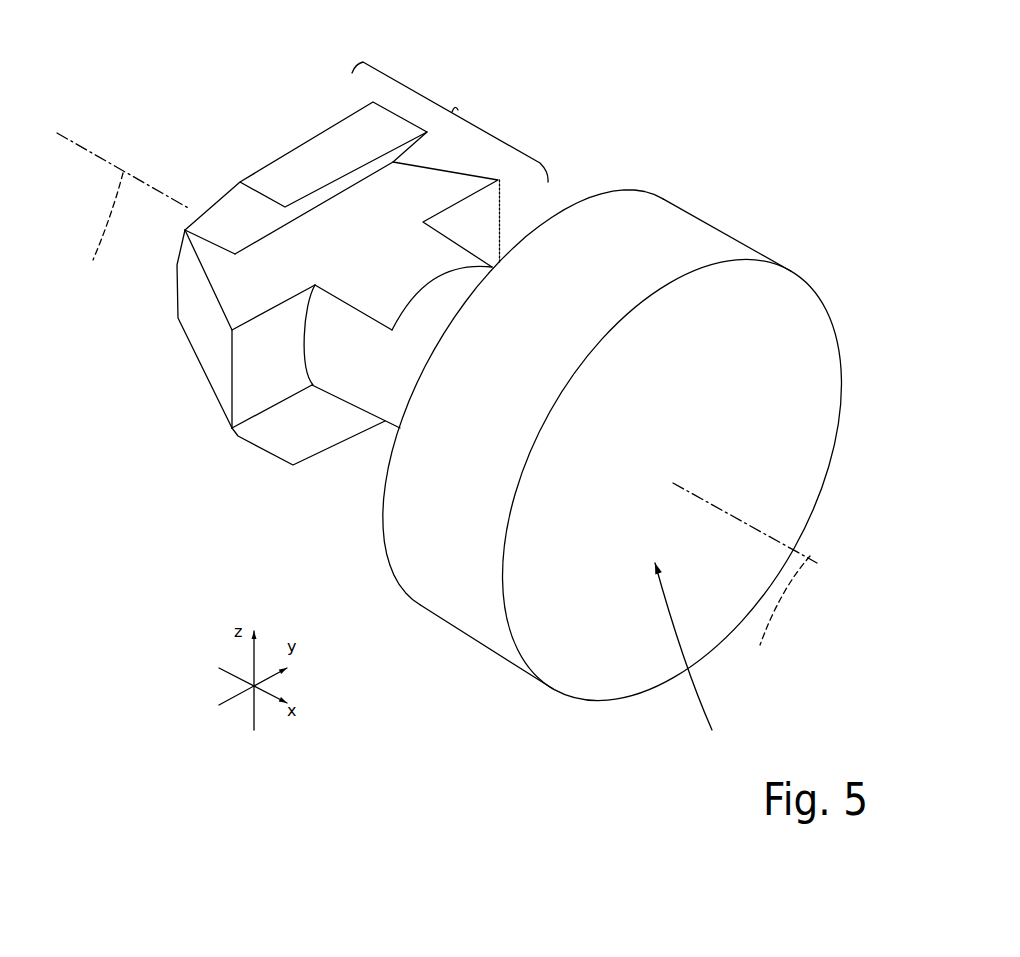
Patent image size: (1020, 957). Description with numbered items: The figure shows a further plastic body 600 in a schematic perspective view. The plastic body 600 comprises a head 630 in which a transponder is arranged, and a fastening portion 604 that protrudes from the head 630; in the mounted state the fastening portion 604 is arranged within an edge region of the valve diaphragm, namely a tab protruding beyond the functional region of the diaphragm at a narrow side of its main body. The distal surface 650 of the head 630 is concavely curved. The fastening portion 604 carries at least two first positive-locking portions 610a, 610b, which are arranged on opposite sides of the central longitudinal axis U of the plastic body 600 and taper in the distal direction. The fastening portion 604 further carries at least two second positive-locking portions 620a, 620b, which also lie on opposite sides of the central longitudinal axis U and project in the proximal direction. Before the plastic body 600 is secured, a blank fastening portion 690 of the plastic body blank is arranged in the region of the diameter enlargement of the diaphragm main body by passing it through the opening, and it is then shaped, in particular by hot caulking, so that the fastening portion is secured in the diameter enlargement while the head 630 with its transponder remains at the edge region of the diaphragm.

The plastic body 600 is at (795, 168).
The fastening portion 604 is at (205, 163).
The first positive-locking portion 610a is at (217, 352).
The first positive-locking portion 610b is at (483, 205).
The second positive-locking portion 620a is at (325, 153).
The second positive-locking portion 620b is at (375, 377).
The head 630 is at (705, 237).
The distal surface 650 is at (705, 667).
The blank fastening portion 690 is at (450, 122).